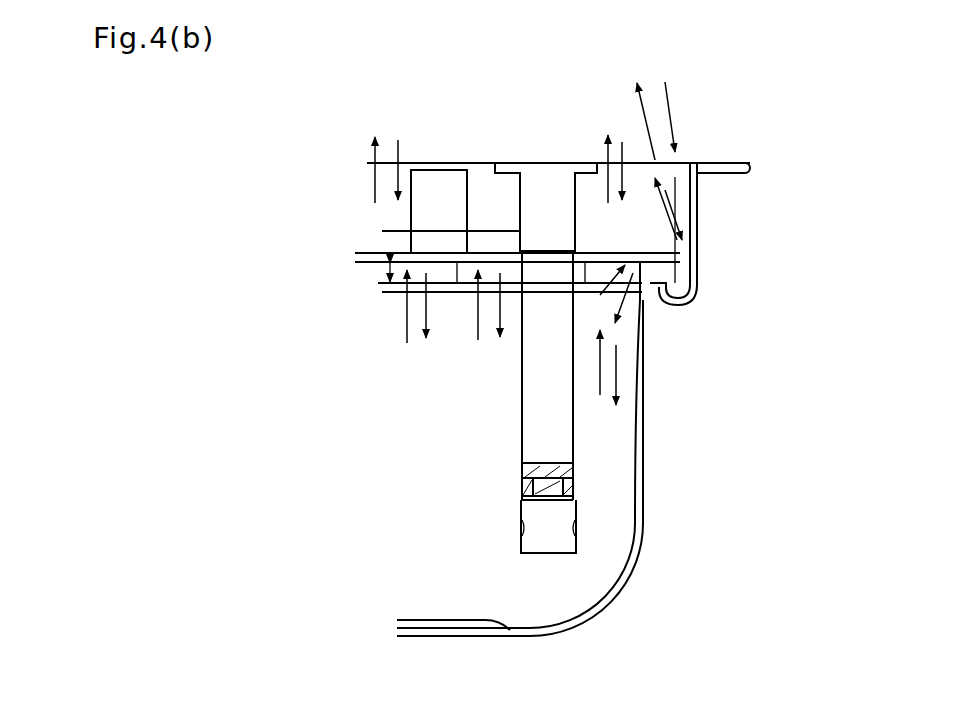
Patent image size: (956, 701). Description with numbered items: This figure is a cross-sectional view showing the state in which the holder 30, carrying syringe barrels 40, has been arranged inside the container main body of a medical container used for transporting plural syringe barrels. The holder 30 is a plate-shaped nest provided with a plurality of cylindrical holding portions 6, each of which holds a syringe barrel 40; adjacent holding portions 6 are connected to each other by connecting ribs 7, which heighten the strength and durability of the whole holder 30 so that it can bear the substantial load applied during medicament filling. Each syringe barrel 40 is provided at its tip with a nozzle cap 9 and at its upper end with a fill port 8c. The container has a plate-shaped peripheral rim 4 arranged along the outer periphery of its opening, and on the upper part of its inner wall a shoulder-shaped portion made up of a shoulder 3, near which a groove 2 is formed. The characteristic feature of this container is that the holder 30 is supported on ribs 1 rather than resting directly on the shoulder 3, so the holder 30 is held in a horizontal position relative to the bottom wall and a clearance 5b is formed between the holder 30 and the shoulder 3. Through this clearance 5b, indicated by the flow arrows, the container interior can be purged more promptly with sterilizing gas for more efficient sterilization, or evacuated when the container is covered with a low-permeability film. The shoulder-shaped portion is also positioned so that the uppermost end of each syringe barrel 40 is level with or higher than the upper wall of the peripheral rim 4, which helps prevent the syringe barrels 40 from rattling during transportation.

The rib 1 is at (456, 263).
The groove 2 is at (679, 294).
The shoulder 3 is at (653, 290).
The peripheral rim 4 is at (713, 162).
The clearance 5b is at (386, 272).
The holding portion 6 is at (432, 192).
The connecting rib 7 is at (503, 240).
The fill port of syringe barrel 8c is at (539, 162).
The nozzle cap 9 is at (535, 533).
The holder 30 is at (372, 244).
The syringe barrel 40 is at (503, 417).